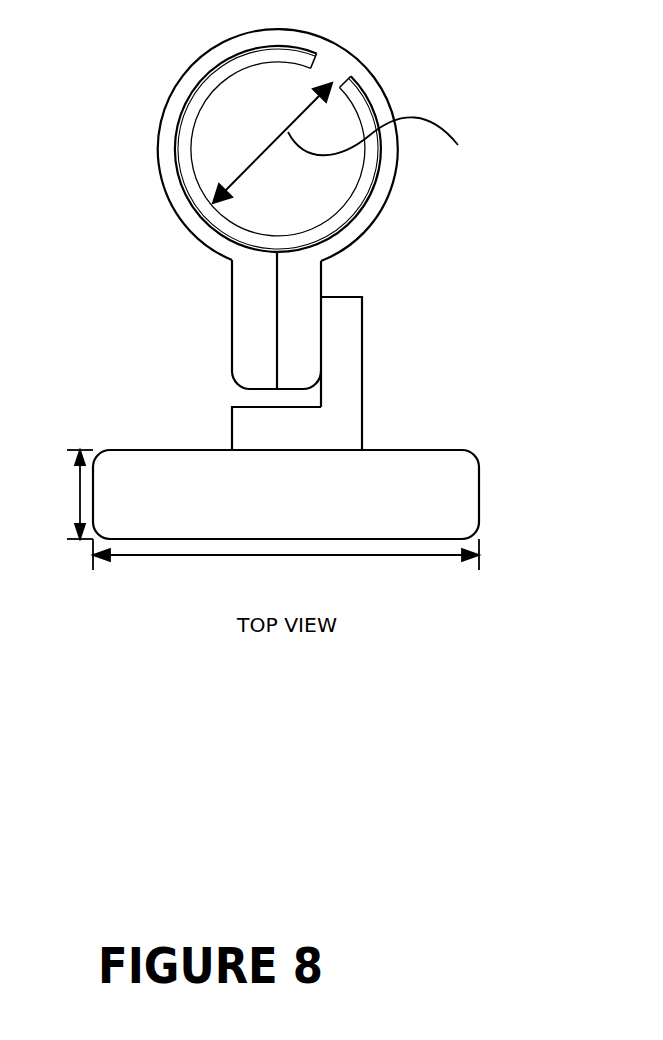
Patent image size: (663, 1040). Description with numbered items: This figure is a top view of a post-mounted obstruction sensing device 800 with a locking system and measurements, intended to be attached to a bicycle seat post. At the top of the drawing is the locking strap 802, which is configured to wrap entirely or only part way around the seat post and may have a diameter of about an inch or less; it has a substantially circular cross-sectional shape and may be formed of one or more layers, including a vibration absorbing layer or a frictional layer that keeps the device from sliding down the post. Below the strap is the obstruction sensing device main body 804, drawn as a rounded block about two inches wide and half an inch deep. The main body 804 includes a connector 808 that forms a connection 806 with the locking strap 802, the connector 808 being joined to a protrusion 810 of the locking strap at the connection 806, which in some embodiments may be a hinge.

The post-mounted obstruction sensing device 800 is at (293, 306).
The locking strap 802 is at (355, 223).
The obstruction sensing device main body 804 is at (450, 493).
The connection 806 is at (308, 330).
The connector 808 is at (313, 428).
The protrusion 810 is at (247, 330).